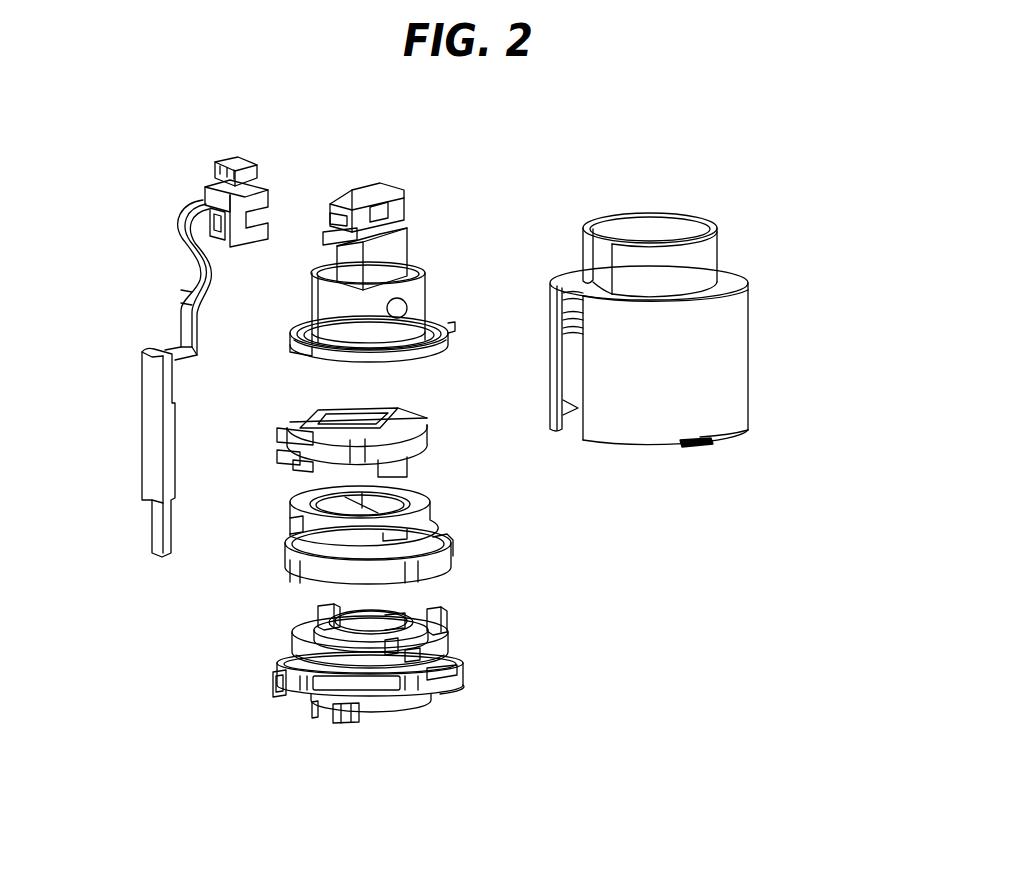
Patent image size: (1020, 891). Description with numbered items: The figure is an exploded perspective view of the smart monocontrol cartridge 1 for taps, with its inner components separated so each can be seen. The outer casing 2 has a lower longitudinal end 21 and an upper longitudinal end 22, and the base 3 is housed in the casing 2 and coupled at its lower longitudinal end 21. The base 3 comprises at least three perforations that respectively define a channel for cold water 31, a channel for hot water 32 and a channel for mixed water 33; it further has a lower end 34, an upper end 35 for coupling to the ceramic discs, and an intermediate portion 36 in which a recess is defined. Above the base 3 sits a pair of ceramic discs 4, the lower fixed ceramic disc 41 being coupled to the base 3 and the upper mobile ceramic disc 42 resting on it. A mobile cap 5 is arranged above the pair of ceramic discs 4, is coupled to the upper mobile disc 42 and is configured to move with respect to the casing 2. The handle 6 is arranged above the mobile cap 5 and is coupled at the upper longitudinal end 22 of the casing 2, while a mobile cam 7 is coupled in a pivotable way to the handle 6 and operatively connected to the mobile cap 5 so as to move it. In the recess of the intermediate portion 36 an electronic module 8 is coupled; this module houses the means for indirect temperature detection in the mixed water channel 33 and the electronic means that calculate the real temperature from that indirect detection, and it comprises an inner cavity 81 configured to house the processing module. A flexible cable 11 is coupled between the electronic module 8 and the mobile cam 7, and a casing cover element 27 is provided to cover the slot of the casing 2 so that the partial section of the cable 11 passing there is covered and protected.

The smart monocontrol cartridge 1 is at (657, 147).
The casing 2 is at (718, 346).
The lower longitudinal end 21 is at (741, 430).
The upper longitudinal end 22 is at (705, 223).
The base 3 is at (493, 637).
The channel for cold water 31 is at (393, 613).
The channel for hot water 32 is at (447, 622).
The channel for mixed water 33 is at (320, 632).
The lower end 34 is at (313, 714).
The upper end 35 is at (413, 657).
The intermediate portion 36 is at (458, 697).
The pair of ceramic discs 4 is at (460, 513).
The lower fixed ceramic disc 41 is at (281, 562).
The upper mobile ceramic disc 42 is at (288, 532).
The mobile cap 5 is at (400, 453).
The handle 6 is at (416, 309).
The mobile cam 7 is at (396, 257).
The electronic module 8 is at (332, 690).
The flexible cable 11 is at (181, 292).
The casing cover element 27 is at (152, 381).
The inner cavity 81 is at (290, 680).